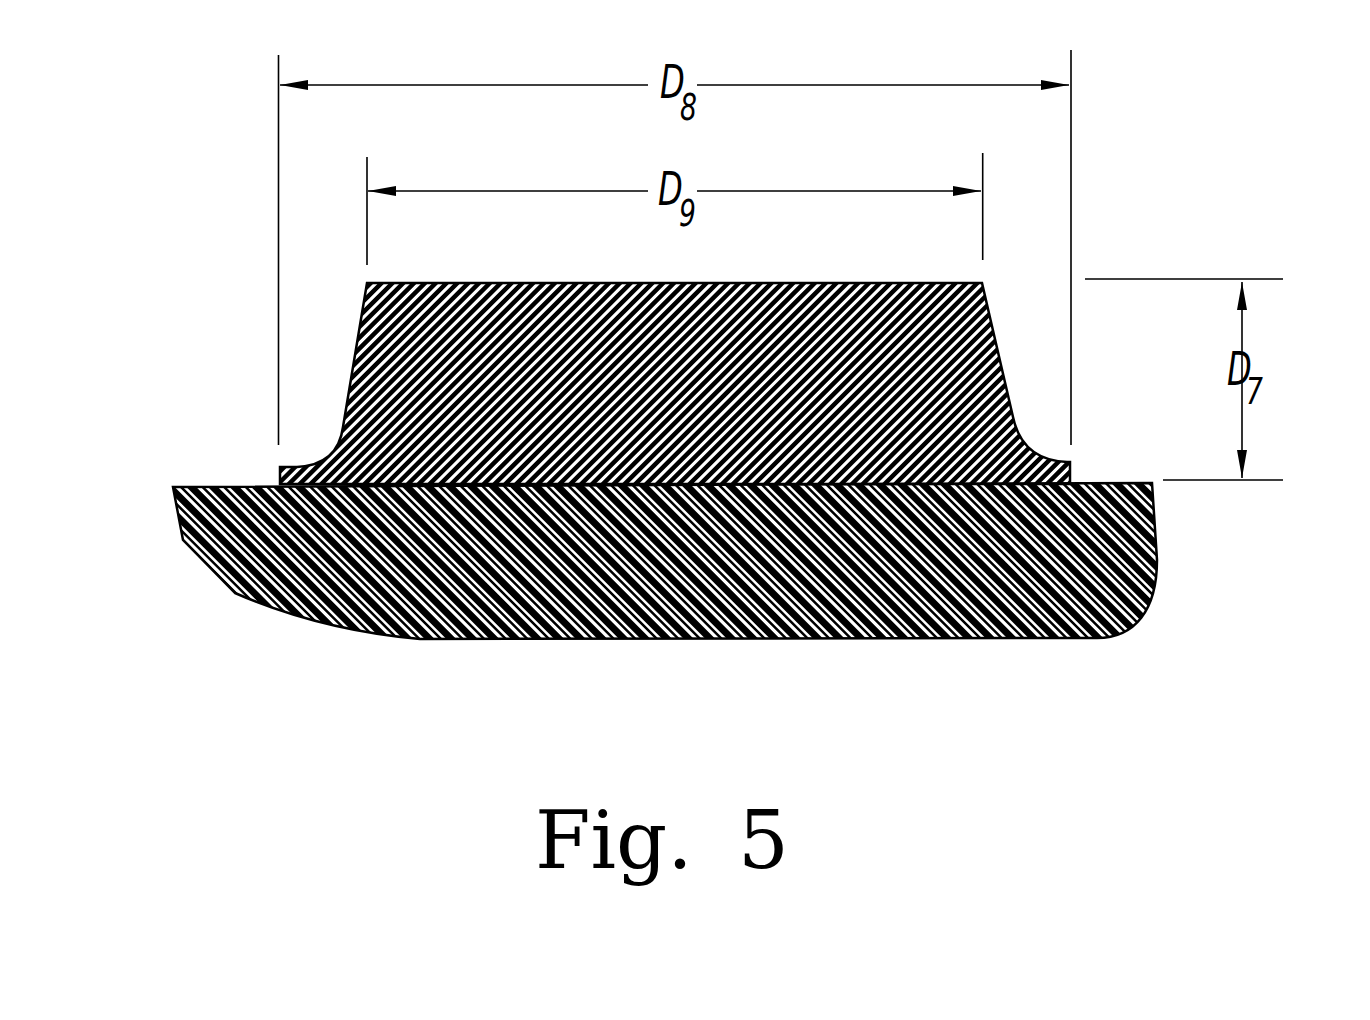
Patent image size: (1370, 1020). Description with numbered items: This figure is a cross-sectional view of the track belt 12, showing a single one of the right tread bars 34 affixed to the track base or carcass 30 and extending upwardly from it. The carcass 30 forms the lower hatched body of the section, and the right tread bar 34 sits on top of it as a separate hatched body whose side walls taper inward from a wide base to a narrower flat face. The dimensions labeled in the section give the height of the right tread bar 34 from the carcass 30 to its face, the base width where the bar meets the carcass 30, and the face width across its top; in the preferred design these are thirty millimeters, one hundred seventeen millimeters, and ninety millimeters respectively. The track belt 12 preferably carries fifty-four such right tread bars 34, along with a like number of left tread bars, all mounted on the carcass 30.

The track belt 12 is at (1250, 132).
The track base or carcass 30 is at (947, 602).
The right tread bar 34 is at (380, 342).